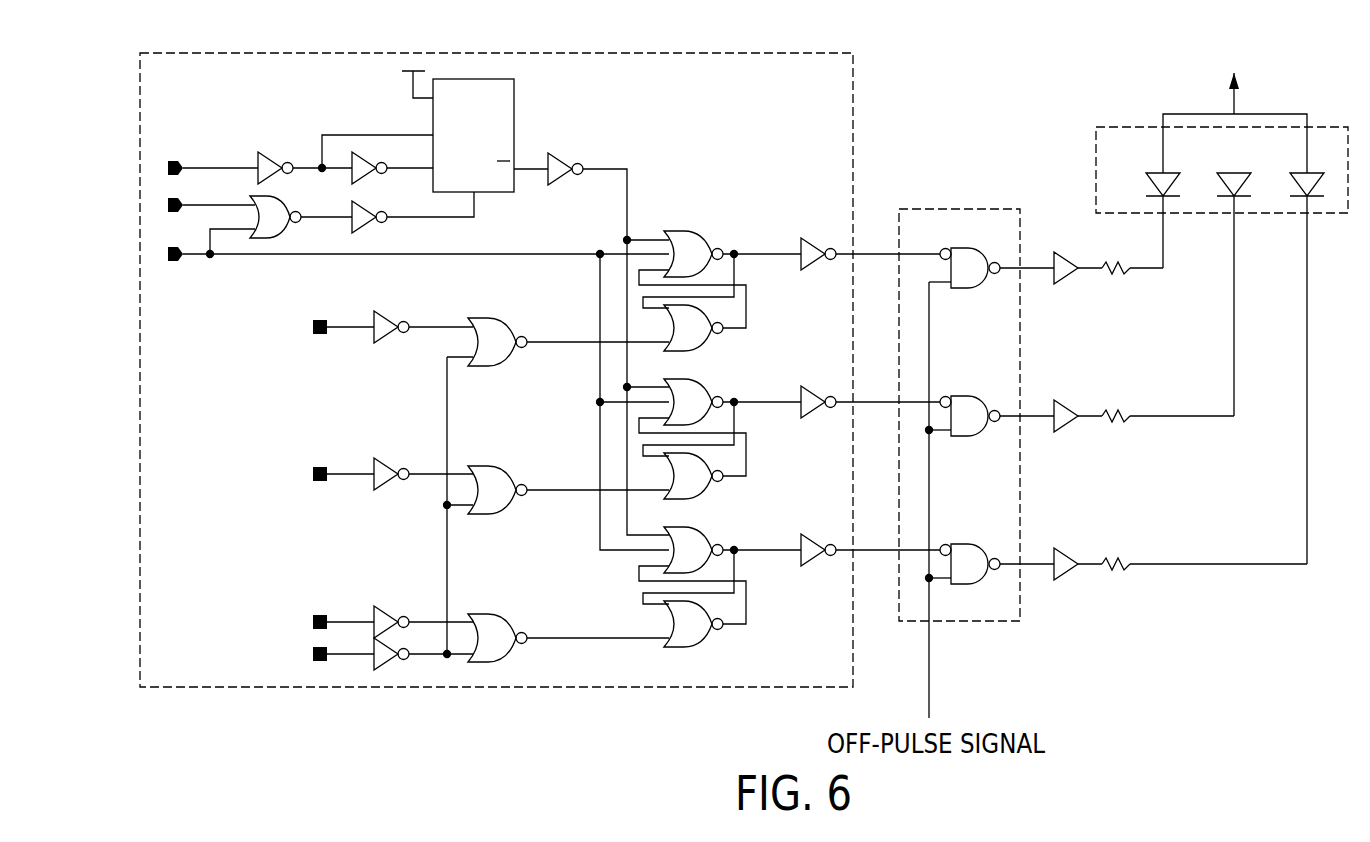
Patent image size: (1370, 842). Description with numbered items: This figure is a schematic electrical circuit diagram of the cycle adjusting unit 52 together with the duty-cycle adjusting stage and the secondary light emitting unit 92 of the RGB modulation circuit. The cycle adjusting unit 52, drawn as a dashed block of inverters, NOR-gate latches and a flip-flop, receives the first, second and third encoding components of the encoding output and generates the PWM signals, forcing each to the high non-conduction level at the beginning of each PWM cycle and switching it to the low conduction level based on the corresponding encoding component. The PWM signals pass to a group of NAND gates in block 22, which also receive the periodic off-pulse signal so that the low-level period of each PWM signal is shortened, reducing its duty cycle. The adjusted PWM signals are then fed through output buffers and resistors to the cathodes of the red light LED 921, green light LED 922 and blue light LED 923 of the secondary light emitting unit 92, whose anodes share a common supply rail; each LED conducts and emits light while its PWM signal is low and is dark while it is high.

The cycle adjusting unit 52 is at (853, 84).
The NAND gate output circuit 22 is at (958, 209).
The secondary light emitting unit 92 is at (1337, 127).
The red light LED 921 is at (1148, 204).
The green light LED 922 is at (1220, 278).
The blue light LED 923 is at (1293, 352).